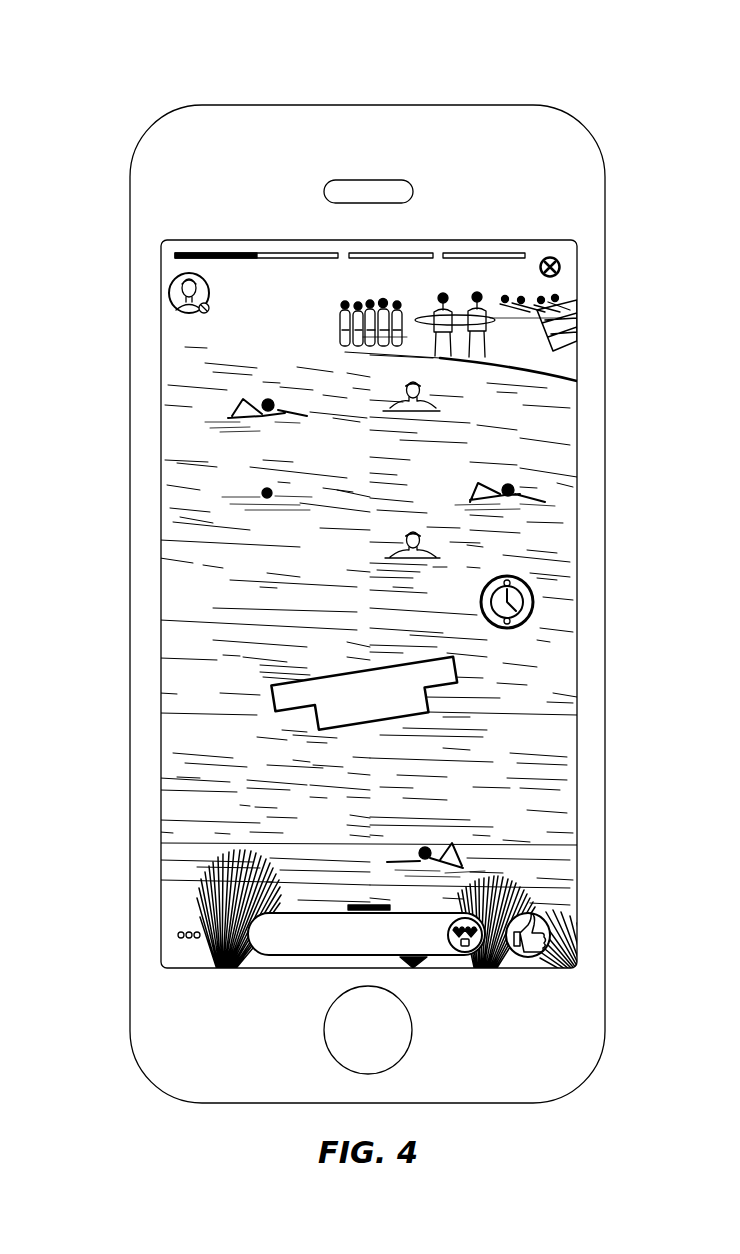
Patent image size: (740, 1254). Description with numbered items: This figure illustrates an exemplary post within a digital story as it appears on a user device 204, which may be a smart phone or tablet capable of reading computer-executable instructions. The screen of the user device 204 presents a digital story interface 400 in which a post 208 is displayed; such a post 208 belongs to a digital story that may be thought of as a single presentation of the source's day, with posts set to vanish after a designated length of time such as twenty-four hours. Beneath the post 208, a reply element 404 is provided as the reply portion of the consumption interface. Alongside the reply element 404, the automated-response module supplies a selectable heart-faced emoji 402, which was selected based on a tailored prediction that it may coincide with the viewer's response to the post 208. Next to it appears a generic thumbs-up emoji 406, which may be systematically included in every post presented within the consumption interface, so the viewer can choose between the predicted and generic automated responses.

The user device 204 is at (112, 72).
The post 208 is at (161, 515).
The digital story interface 400 is at (596, 343).
The heart-faced emoji 402 is at (482, 944).
The reply element 404 is at (428, 957).
The generic thumbs-up emoji 406 is at (535, 968).